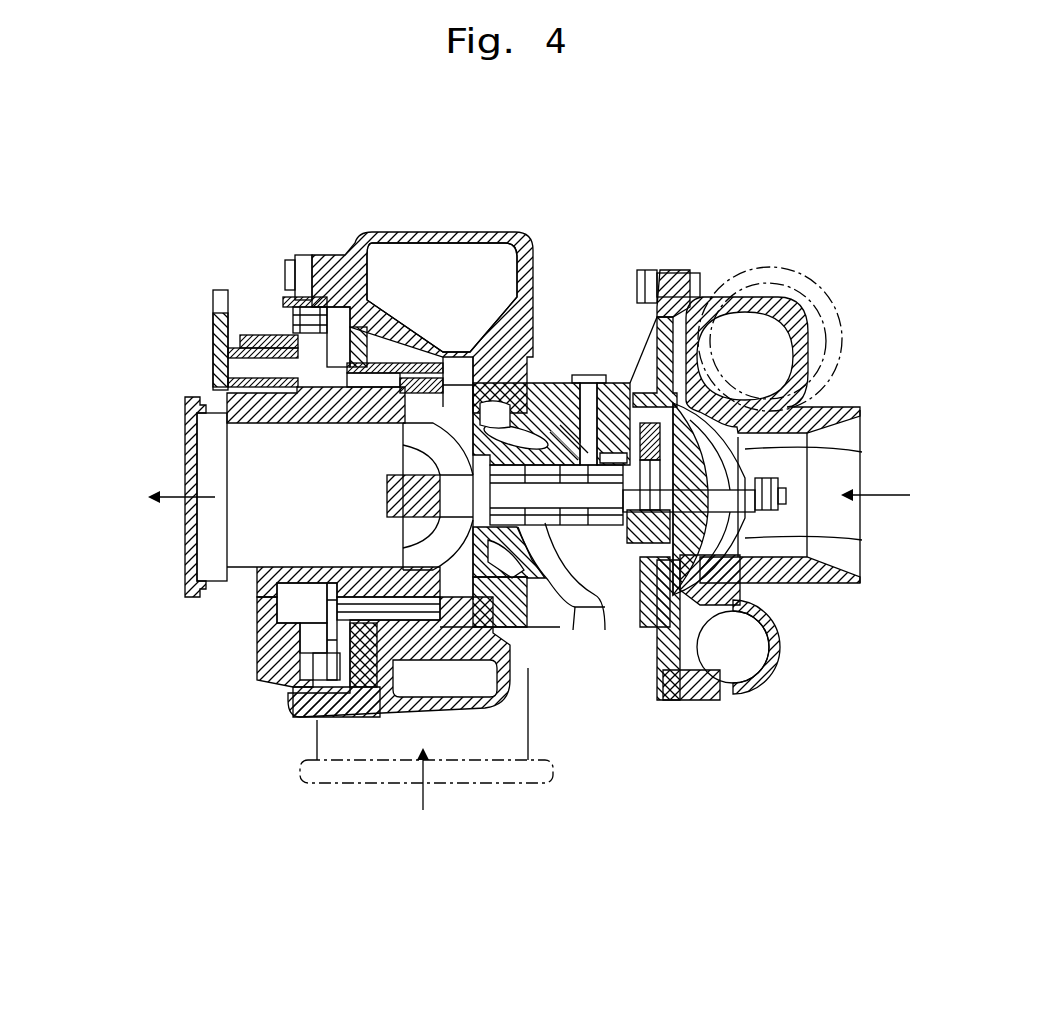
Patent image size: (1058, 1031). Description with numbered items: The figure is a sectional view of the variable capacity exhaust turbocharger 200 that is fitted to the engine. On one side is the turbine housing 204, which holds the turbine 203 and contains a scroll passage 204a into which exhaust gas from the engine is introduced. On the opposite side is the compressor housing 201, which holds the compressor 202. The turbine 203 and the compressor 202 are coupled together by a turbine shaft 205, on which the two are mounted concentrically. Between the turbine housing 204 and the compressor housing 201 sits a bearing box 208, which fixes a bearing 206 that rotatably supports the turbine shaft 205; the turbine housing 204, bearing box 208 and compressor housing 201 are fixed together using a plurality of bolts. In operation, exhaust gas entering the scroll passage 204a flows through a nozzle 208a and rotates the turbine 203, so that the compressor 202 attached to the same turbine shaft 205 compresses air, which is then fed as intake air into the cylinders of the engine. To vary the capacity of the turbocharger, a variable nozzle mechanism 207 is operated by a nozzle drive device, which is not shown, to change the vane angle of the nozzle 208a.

The variable capacity exhaust turbocharger 200 is at (718, 702).
The compressor housing 201 is at (710, 298).
The compressor 202 is at (862, 452).
The turbine 203 is at (397, 544).
The turbine housing 204 is at (370, 238).
The scroll passage 204a is at (497, 258).
The turbine shaft 205 is at (862, 540).
The bearing 206 is at (585, 562).
The variable nozzle mechanism 207 is at (196, 353).
The bearing box 208 is at (581, 382).
The nozzle 208a is at (455, 376).